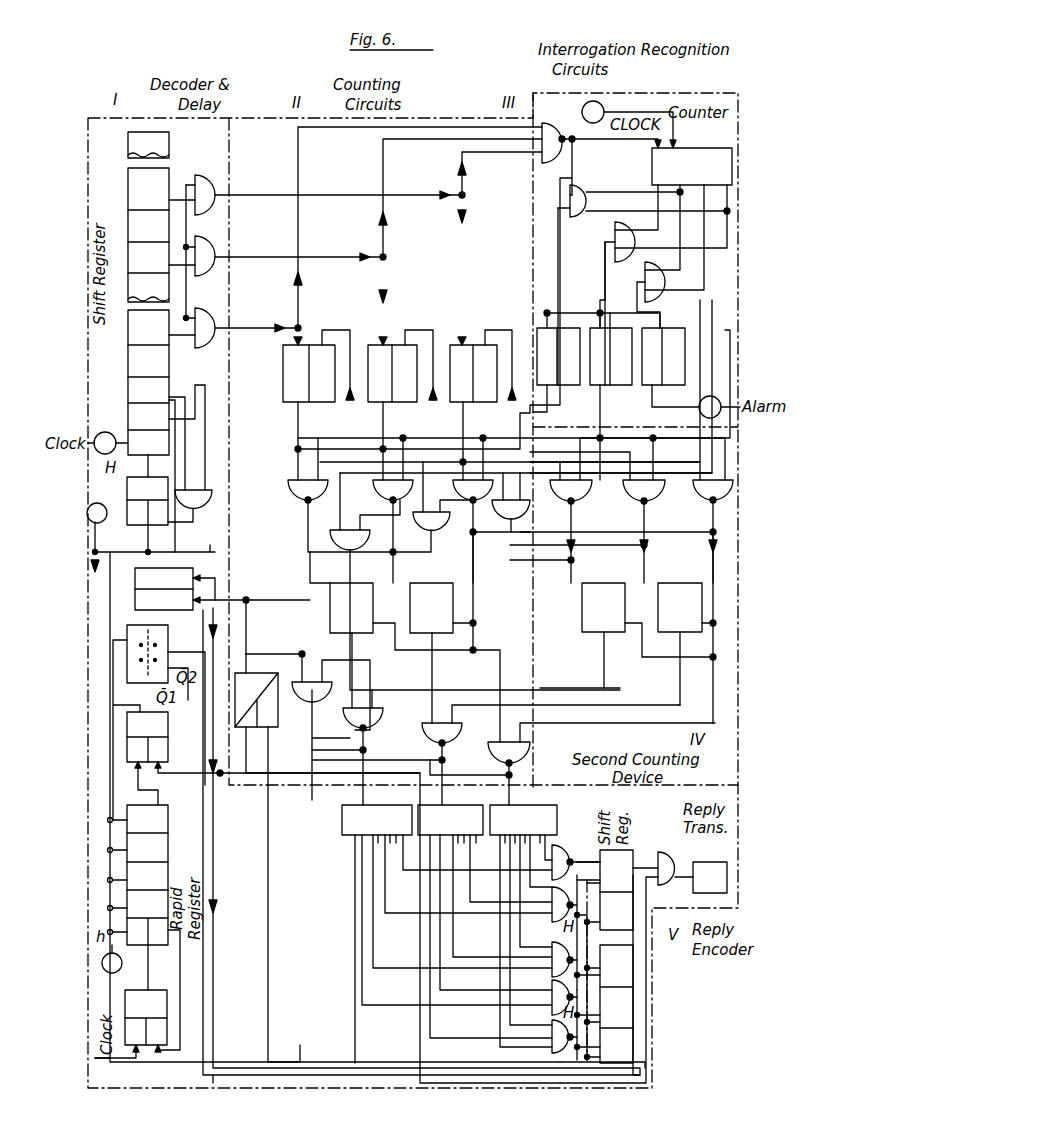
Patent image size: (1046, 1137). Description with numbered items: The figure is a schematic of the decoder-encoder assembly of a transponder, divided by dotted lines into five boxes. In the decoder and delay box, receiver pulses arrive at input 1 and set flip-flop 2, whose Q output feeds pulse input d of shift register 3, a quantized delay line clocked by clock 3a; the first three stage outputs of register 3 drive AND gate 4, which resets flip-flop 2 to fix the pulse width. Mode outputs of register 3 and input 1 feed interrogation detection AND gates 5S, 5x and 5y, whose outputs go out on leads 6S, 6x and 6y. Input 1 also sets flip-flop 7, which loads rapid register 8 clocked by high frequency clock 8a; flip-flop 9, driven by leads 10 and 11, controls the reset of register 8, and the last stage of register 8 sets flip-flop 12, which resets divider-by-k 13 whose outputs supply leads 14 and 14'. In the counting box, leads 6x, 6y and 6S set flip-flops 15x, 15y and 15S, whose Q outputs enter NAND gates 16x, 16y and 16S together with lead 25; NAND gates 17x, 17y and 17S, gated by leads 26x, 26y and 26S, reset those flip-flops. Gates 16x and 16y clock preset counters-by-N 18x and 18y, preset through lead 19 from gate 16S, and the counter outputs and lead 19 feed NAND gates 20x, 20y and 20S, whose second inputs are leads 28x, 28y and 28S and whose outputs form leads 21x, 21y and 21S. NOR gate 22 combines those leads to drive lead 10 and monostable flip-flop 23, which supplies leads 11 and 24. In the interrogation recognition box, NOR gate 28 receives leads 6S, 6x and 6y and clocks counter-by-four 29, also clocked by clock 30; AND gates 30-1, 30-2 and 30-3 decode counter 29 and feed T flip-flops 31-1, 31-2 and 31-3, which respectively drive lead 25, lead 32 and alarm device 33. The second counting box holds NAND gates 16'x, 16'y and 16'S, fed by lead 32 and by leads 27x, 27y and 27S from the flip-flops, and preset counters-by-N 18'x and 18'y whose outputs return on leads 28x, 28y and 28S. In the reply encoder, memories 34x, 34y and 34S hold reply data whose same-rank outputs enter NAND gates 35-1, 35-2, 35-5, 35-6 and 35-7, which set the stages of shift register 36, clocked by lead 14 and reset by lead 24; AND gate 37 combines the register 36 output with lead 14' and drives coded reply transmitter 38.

The input 1 is at (103, 520).
The flip-flop 2 is at (127, 503).
The shift register 3 is at (128, 362).
The clock 3a is at (106, 432).
The AND gate 4 is at (203, 510).
The interrogation detection AND gate 5S is at (207, 178).
The interrogation detection AND gate 5y is at (207, 250).
The interrogation detection AND gate 5x is at (207, 318).
The lead 6S is at (222, 195).
The lead 6y is at (222, 257).
The lead 6x is at (222, 328).
The flip-flop 7 is at (158, 990).
The rapid register 8 is at (168, 905).
The high frequency clock 8a is at (112, 973).
The flip-flop 9 is at (193, 578).
The lead 10 is at (213, 605).
The lead 11 is at (226, 782).
The flip-flop 12 is at (168, 757).
The divider-by-k 13 is at (168, 638).
The lead 14 is at (408, 846).
The lead 14' is at (372, 841).
The flip-flop 15x is at (283, 358).
The flip-flop 15y is at (372, 355).
The flip-flop 15S is at (450, 355).
The two-input NAND gate 16x is at (290, 492).
The two-input NAND gate 16y is at (380, 498).
The two-input NAND gate 16S is at (468, 498).
The NAND gate 16'x is at (562, 510).
The NAND gate 16'y is at (630, 531).
The NAND gate 16'S is at (699, 531).
The two-input NAND gate 17x is at (338, 542).
The two-input NAND gate 17y is at (438, 536).
The two-input NAND gate 17S is at (520, 525).
The preset counter-by-N 18x is at (352, 634).
The preset counter-by-N 18y is at (458, 586).
The preset counter-by-N 18'x is at (639, 635).
The preset counter-by-N 18'y is at (682, 627).
The lead 19 is at (475, 612).
The two-input NAND gate 20x is at (375, 722).
The two-input NAND gate 20y is at (425, 718).
The two-input NAND gate 20S is at (488, 745).
The lead 21x is at (362, 770).
The lead 21y is at (442, 775).
The lead 21S is at (528, 775).
The NOR gate 22 is at (300, 684).
The monostable flip-flop 23 is at (257, 682).
The lead 24 is at (265, 765).
The lead 25 is at (518, 418).
The lead 26x is at (568, 572).
The lead 26y is at (585, 552).
The lead 26S is at (592, 522).
The lead 27x is at (483, 448).
The lead 27y is at (432, 458).
The lead 27S is at (508, 474).
The NOR gate 28 is at (555, 125).
The lead 28x is at (545, 696).
The lead 28y is at (556, 702).
The lead 28S is at (566, 728).
The counter-by-four 29 is at (694, 147).
The clock 30 is at (604, 108).
The AND gate 30-1 is at (584, 188).
The AND gate 30-2 is at (617, 234).
The AND gate 30-3 is at (648, 276).
The T flip-flop 31-1 is at (567, 386).
The T flip-flop 31-2 is at (620, 386).
The T flip-flop 31-3 is at (686, 376).
The lead 32 is at (610, 420).
The alarm device 33 is at (715, 398).
The memory 34x is at (342, 827).
The memory 34y is at (473, 812).
The memory 34S is at (535, 815).
The NAND gate 35-1 is at (575, 840).
The NAND gate 35-2 is at (552, 925).
The NAND gate 35-5 is at (552, 968).
The NAND gate 35-6 is at (552, 1012).
The NAND gate 35-7 is at (562, 1052).
The shift register 36 is at (626, 850).
The two-input AND gate 37 is at (668, 853).
The coded reply transmitter 38 is at (710, 860).